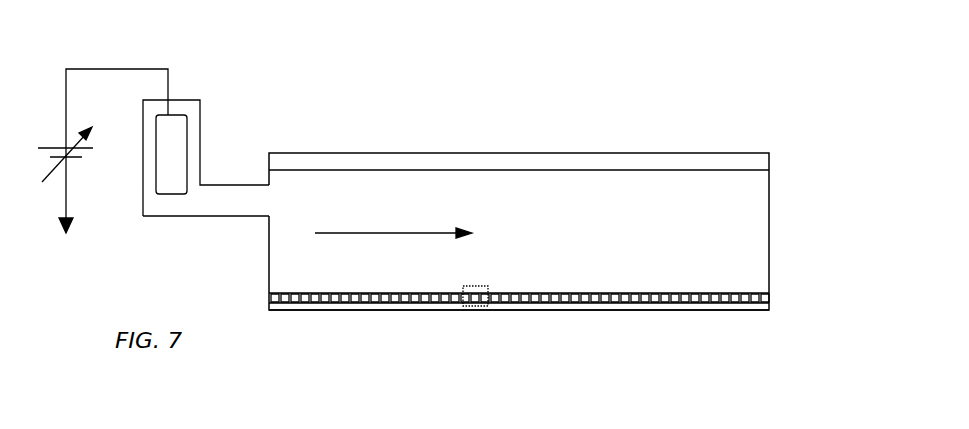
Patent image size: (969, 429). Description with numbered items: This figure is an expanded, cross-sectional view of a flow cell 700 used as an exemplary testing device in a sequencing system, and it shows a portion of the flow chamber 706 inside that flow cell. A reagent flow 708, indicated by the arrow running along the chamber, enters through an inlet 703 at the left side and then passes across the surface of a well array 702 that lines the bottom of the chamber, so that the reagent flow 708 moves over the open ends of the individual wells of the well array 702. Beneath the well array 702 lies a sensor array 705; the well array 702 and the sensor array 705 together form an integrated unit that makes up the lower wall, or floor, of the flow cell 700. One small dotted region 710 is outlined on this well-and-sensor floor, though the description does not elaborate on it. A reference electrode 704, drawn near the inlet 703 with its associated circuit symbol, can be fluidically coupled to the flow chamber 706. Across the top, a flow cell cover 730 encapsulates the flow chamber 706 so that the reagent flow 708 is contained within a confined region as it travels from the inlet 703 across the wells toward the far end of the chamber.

The flow cell 700 is at (528, 45).
The well array 702 is at (707, 300).
The inlet 703 is at (222, 205).
The reference electrode 704 is at (187, 138).
The sensor array 705 is at (658, 310).
The flow chamber 706 is at (600, 190).
The reagent flow 708 is at (363, 233).
The grating unit cell 710 is at (475, 308).
The flow cell cover 730 is at (733, 162).